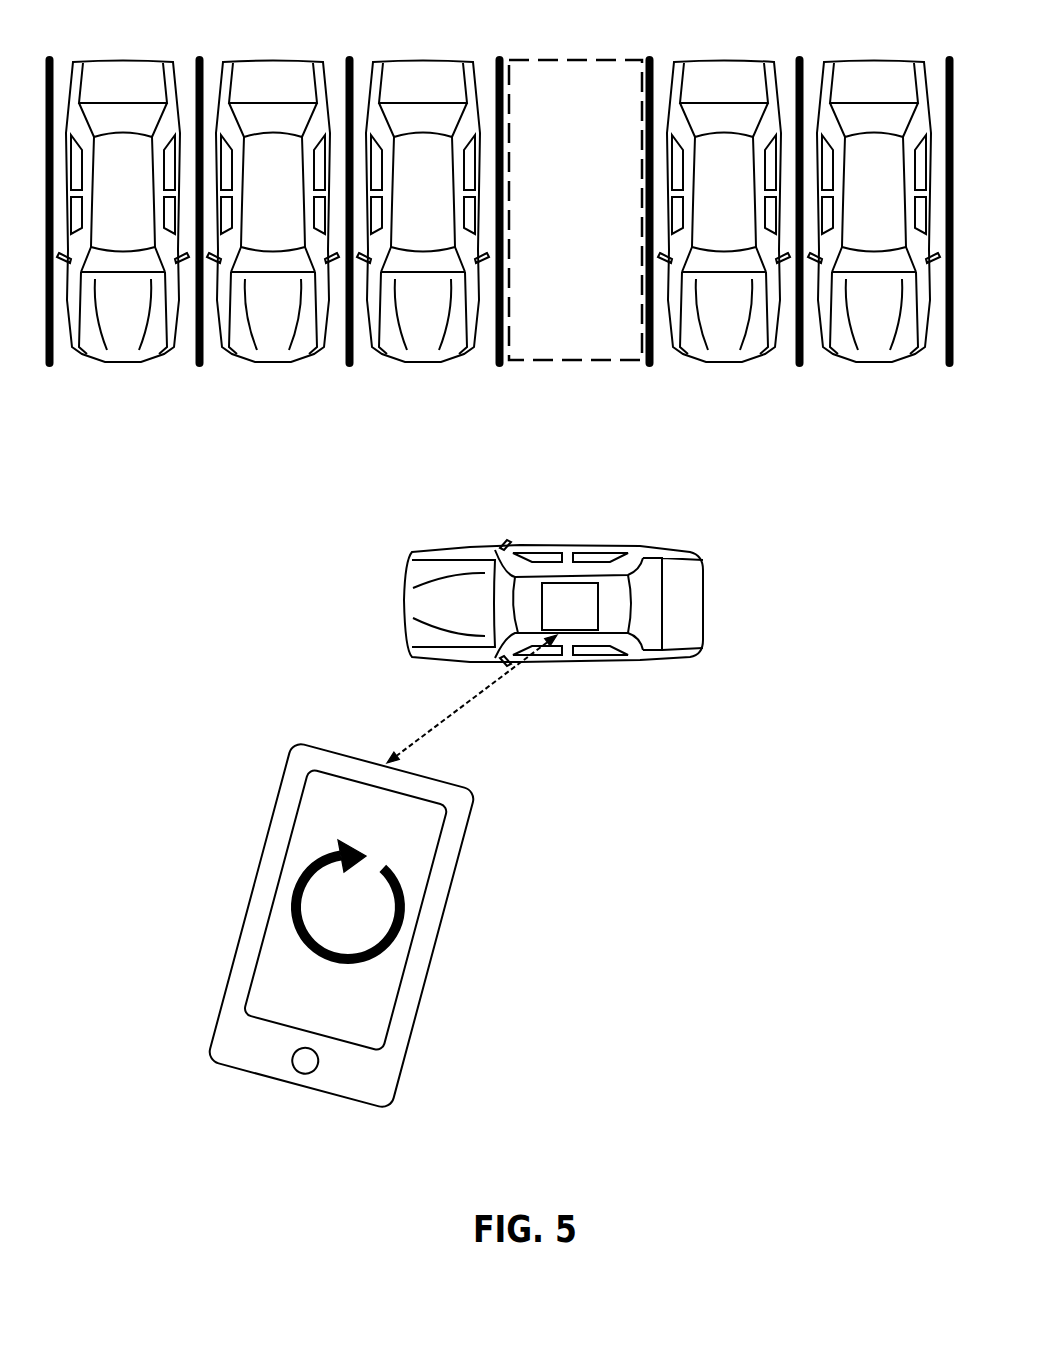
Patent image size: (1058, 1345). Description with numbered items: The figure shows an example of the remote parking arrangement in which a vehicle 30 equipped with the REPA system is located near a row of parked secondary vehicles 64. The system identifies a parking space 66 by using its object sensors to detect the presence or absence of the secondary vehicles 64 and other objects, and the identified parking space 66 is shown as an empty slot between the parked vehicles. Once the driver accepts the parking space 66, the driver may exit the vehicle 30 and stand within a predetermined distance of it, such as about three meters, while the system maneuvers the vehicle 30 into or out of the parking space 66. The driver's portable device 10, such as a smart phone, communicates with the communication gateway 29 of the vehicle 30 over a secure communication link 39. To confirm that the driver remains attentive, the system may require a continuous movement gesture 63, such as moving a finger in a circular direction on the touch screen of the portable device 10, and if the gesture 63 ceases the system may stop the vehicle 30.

The secondary vehicles 64 is at (492, 184).
The parking space 66 is at (593, 58).
The vehicle 30 is at (407, 603).
The communication gateway 29 is at (558, 632).
The secure communication link 39 is at (443, 717).
The portable device 10 is at (247, 902).
The continuous movement gesture 63 is at (298, 925).